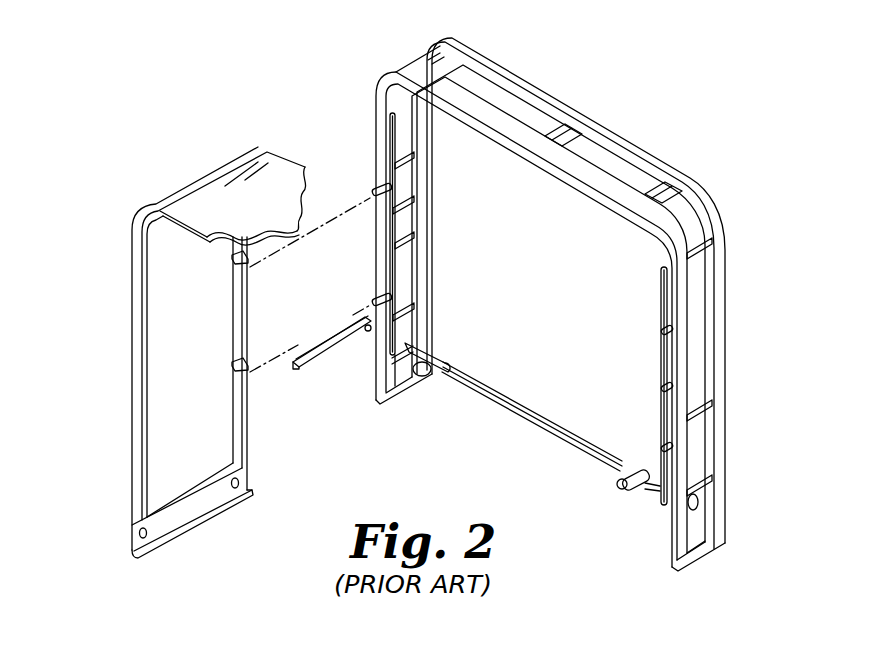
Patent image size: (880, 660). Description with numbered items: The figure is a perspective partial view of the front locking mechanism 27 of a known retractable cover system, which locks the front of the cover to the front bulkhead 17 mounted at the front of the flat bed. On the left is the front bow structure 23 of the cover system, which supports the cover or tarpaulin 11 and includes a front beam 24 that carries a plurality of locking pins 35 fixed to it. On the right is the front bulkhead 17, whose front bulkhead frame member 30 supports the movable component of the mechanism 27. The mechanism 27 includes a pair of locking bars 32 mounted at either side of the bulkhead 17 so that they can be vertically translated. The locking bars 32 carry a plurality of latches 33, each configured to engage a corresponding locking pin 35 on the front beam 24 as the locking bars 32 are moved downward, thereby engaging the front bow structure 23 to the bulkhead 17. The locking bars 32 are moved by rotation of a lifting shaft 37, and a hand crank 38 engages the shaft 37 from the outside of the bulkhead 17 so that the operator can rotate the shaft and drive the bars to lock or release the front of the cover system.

The cover 11 is at (198, 202).
The front bulkhead 17 is at (546, 301).
The front bow structure 23 is at (122, 283).
The front beam 24 is at (248, 416).
The front locking mechanism 27 is at (532, 414).
The front bulkhead frame member 30 is at (502, 118).
The locking bars 32 is at (389, 133).
The latches 33 is at (374, 190).
The locking pin 35 is at (243, 267).
The lifting shaft 37 is at (509, 396).
The hand crank 38 is at (342, 348).